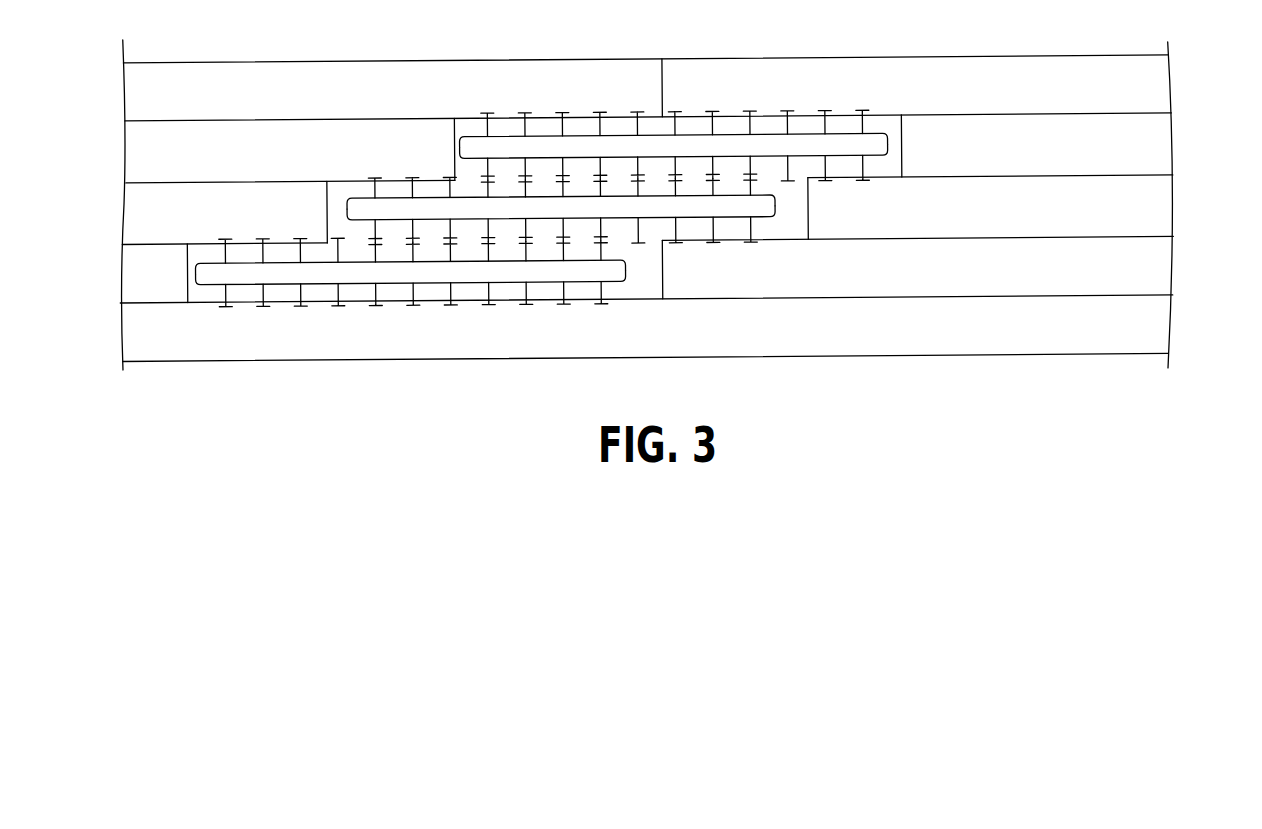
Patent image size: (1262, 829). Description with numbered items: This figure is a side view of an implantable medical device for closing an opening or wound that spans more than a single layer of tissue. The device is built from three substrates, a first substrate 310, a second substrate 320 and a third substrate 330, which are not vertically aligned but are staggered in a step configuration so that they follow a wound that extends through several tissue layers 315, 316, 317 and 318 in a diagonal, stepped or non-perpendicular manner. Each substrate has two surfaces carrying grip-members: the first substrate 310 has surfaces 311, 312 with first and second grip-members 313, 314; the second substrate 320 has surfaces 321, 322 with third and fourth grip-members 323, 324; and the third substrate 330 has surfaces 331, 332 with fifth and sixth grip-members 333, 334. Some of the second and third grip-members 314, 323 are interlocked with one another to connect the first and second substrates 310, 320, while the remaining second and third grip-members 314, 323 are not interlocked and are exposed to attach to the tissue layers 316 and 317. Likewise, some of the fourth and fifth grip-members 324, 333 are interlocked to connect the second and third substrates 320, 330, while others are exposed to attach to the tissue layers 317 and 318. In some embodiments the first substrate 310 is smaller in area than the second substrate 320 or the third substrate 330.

The first substrate 310 is at (686, 120).
The surface of first substrate 311 is at (472, 136).
The surface of first substrate 312 is at (465, 159).
The first grip-members 313 is at (563, 112).
The second grip-members 314 is at (863, 170).
The tissue layer 315 is at (1147, 89).
The tissue layer 316 is at (1147, 152).
The tissue layer 317 is at (1147, 212).
The tissue layer 318 is at (1147, 274).
The second substrate 320 is at (574, 184).
The surface of second substrate 321 is at (358, 195).
The surface of second substrate 322 is at (357, 223).
The third grip-members 323 is at (373, 175).
The fourth grip-members 324 is at (751, 229).
The third substrate 330 is at (436, 273).
The surface of third substrate 331 is at (212, 255).
The surface of third substrate 332 is at (210, 289).
The fifth grip-members 333 is at (225, 234).
The sixth grip-members 334 is at (598, 295).